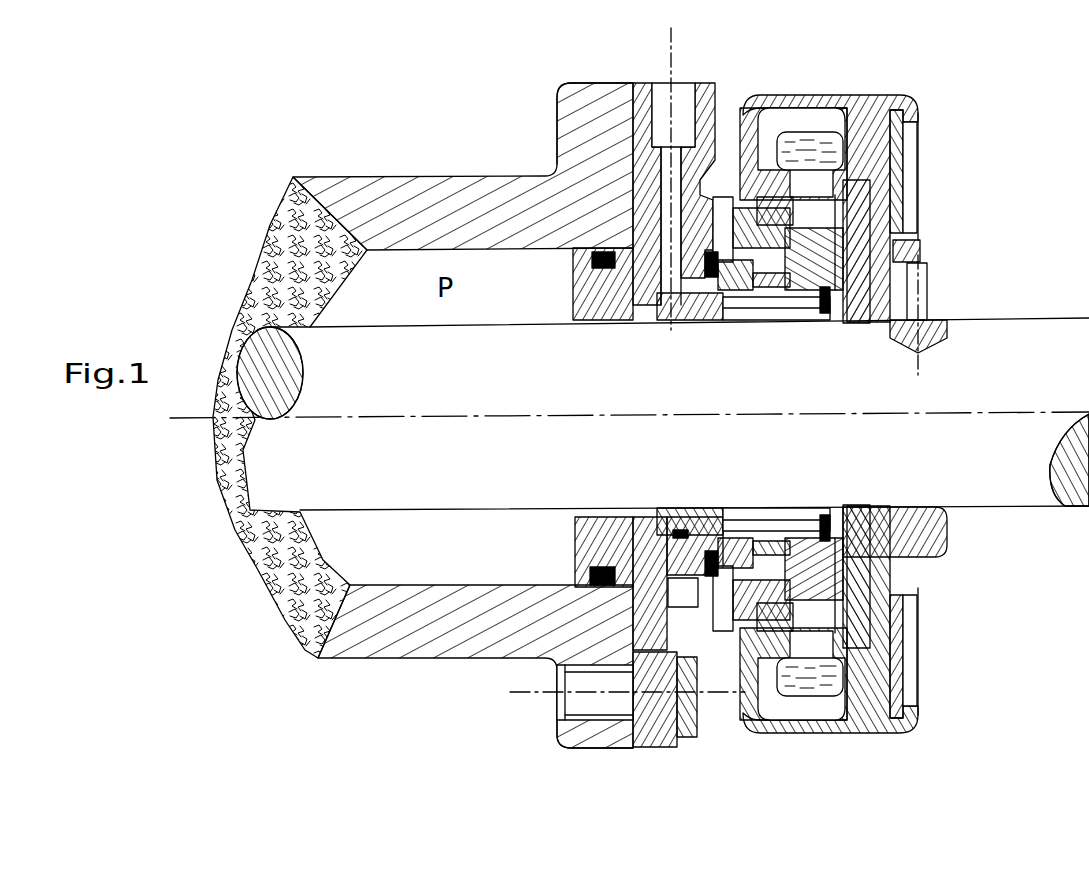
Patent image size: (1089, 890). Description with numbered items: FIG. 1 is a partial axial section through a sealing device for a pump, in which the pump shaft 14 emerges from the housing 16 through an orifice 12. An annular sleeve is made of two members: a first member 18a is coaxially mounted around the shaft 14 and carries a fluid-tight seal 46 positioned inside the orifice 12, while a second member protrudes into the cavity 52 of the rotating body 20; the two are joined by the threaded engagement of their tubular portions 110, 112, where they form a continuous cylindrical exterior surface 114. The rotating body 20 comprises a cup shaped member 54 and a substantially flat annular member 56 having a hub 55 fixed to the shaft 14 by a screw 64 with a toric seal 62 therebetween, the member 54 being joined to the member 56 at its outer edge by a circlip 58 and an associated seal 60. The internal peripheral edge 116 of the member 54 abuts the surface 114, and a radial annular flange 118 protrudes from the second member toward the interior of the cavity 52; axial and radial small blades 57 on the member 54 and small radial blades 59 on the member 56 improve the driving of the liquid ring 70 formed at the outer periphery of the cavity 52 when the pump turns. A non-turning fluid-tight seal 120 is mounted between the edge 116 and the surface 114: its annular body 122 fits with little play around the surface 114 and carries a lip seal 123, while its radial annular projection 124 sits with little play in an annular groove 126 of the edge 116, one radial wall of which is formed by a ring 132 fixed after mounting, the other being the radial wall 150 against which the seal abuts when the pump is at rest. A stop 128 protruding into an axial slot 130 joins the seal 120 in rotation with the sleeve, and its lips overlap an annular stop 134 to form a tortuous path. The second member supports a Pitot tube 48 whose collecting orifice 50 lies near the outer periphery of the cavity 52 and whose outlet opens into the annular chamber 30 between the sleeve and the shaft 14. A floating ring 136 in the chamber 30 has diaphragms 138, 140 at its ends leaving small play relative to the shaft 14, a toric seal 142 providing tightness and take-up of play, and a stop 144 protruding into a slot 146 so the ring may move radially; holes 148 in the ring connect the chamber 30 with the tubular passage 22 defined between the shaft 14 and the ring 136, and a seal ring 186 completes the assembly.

The orifice 12 is at (508, 257).
The shaft 14 is at (1043, 350).
The housing 16 is at (412, 205).
The first member 18a is at (605, 296).
The rotating body 20 is at (850, 85).
The tubular passage 22 is at (800, 540).
The annular chamber 30 is at (815, 300).
The fluid-tight seal 46 is at (608, 276).
The Pitot tube 48 is at (820, 633).
The collecting orifice 50 is at (817, 677).
The cavity 52 is at (812, 178).
The cup shaped member 54 is at (813, 125).
The hub 55 is at (942, 318).
The flat annular member 56 is at (885, 202).
The axial and radial small blades 57 is at (795, 108).
The circlip 58 is at (916, 102).
The small radial blades 59 is at (863, 605).
The seal 60 is at (885, 100).
The toric seal 62 is at (862, 306).
The screw 64 is at (927, 273).
The liquid ring 70 is at (895, 135).
The tubular portion 110 is at (765, 284).
The tubular portion 112 is at (772, 300).
The continuous cylindrical exterior surface 114 is at (888, 576).
The internal peripheral edge 116 is at (714, 590).
The radial annular flange 118 is at (890, 242).
The non-turning fluid-tight seal 120 is at (735, 286).
The annular body 122 is at (745, 596).
The lip seal 123 is at (903, 253).
The radial annular projection 124 is at (760, 560).
The annular groove 126 is at (742, 712).
The stop 128 is at (704, 270).
The axial slot 130 is at (732, 195).
The ring 132 is at (832, 188).
The annular stop 134 is at (803, 227).
The floating ring 136 is at (680, 100).
The diaphragm 138 is at (700, 308).
The diaphragm 140 is at (826, 306).
The toric seal 142 is at (877, 520).
The stop 144 is at (672, 531).
The slot 146 is at (688, 520).
The holes 148 is at (772, 312).
The radial wall 150 is at (727, 600).
The seal ring 186 is at (848, 300).